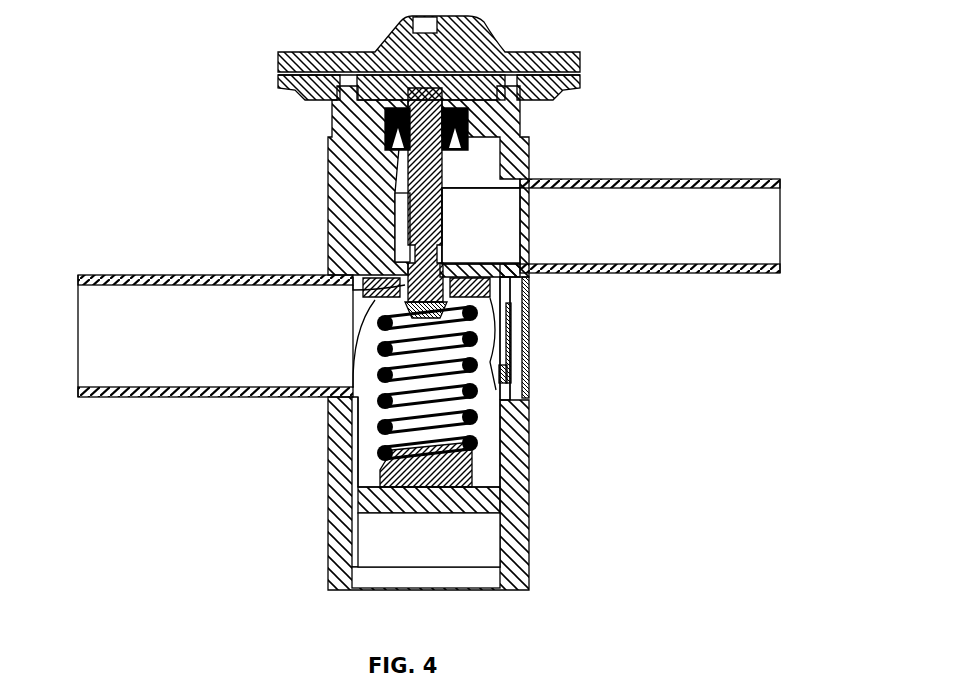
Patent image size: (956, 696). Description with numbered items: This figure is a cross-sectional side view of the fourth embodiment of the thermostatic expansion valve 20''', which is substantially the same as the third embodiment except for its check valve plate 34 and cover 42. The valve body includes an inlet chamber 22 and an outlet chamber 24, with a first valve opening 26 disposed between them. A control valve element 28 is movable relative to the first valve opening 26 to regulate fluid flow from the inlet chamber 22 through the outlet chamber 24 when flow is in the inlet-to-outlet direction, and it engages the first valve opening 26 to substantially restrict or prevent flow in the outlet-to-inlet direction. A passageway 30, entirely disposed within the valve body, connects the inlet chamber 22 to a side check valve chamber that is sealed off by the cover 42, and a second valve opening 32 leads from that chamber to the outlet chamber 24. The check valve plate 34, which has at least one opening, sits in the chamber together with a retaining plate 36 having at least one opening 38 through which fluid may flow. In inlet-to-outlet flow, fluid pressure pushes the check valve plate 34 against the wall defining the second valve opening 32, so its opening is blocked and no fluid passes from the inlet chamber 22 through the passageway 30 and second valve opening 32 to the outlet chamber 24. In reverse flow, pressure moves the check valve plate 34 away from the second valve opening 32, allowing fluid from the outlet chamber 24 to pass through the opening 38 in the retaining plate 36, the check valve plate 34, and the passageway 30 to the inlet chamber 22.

The valve 20''' is at (354, 60).
The inlet chamber 22 is at (791, 227).
The outlet chamber 24 is at (71, 339).
The first valve opening 26 is at (350, 274).
The control valve element 28 is at (334, 163).
The passageway 30 is at (519, 258).
The second valve opening 32 is at (527, 458).
The check valve plate 34 is at (506, 326).
The retaining plate 36 is at (494, 353).
The opening 38 is at (508, 372).
The cover 42 is at (529, 332).